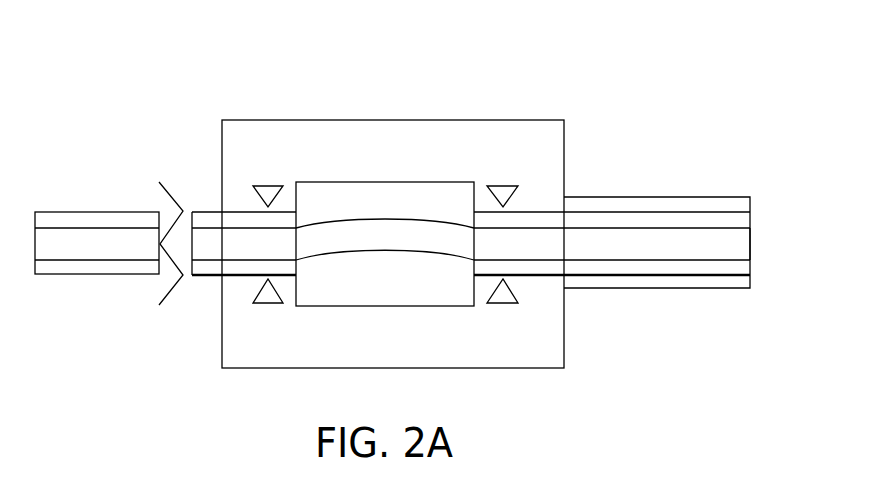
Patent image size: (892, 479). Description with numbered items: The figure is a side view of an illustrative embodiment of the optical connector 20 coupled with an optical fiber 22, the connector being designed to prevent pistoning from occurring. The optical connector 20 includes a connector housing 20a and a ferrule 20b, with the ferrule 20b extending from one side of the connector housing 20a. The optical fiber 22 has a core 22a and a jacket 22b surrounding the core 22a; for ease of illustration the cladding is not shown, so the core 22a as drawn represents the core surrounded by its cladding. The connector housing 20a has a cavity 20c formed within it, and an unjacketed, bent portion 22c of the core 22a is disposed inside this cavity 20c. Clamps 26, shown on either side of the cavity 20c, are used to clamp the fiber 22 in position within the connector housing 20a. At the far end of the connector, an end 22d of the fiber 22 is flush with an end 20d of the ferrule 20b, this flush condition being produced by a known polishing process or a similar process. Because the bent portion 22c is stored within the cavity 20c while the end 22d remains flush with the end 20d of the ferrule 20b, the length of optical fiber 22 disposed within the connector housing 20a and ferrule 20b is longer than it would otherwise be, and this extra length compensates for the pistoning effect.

The optical connector 20 is at (650, 88).
The connector housing 20a is at (471, 120).
The ferrule 20b is at (633, 197).
The cavity 20c is at (347, 182).
The end of the ferrule 20d is at (750, 278).
The optical fiber 22 is at (530, 210).
The core 22a is at (245, 237).
The jacket 22b is at (230, 267).
The unjacketed, bent portion 22c is at (425, 252).
The end of the fiber 22d is at (750, 243).
The clamps 26 is at (268, 185).